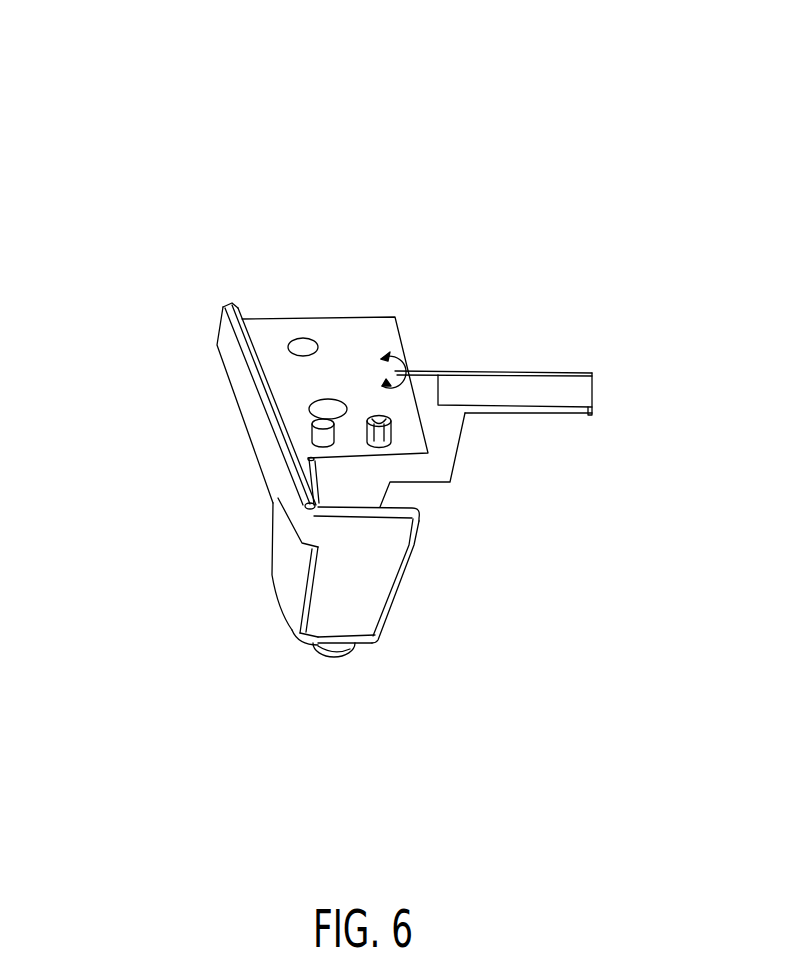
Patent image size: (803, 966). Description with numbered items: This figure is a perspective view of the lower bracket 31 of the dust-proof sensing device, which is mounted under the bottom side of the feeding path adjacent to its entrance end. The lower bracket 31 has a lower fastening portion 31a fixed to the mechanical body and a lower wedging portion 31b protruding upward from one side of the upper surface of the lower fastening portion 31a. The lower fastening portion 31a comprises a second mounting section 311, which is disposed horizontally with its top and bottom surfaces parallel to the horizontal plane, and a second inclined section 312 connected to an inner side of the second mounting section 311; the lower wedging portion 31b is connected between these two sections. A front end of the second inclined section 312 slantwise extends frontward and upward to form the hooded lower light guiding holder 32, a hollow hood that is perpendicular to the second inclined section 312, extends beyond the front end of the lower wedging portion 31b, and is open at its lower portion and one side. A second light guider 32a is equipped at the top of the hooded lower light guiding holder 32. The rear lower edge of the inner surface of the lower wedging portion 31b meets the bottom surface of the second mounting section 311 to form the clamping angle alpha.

The lower bracket 31 is at (85, 33).
The second inclined section 312 is at (357, 324).
The second mounting section 311 is at (530, 372).
The lower fastening portion 31a is at (573, 397).
The lower wedging portion 31b is at (453, 441).
The hooded lower light guiding holder 32 is at (284, 565).
The second light guider 32a is at (348, 655).